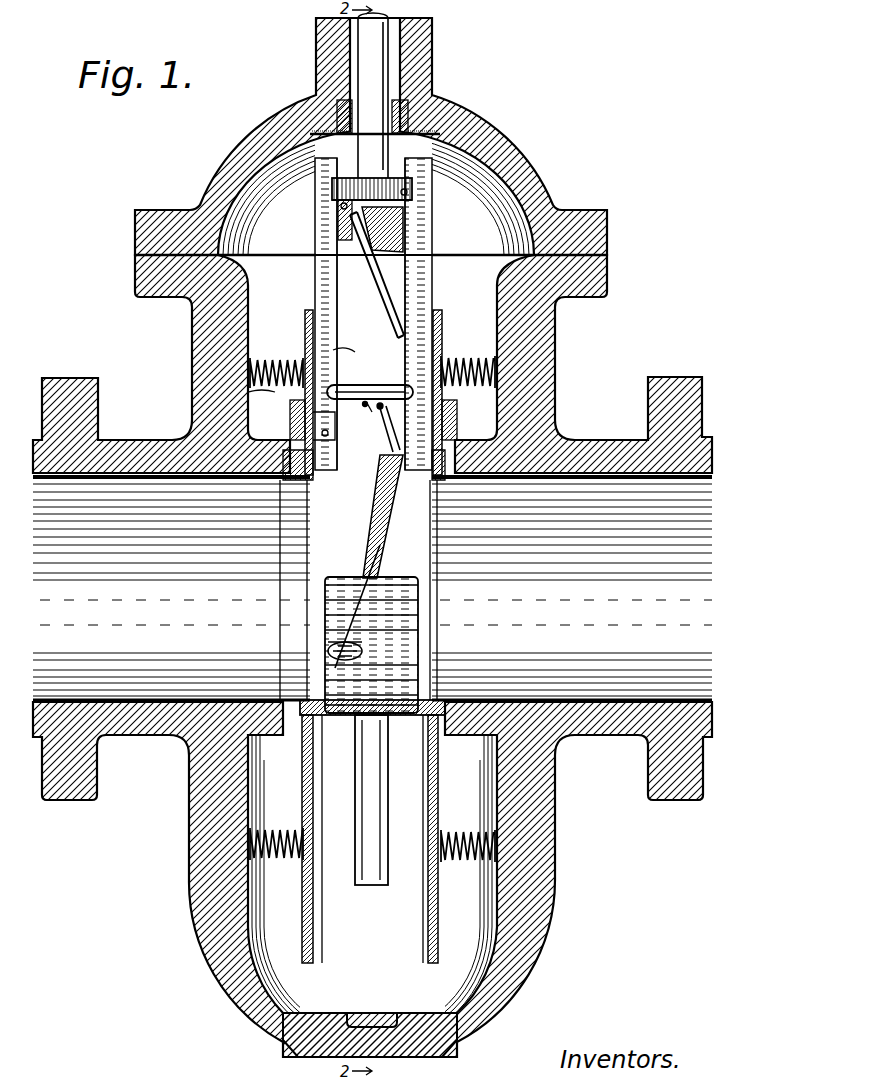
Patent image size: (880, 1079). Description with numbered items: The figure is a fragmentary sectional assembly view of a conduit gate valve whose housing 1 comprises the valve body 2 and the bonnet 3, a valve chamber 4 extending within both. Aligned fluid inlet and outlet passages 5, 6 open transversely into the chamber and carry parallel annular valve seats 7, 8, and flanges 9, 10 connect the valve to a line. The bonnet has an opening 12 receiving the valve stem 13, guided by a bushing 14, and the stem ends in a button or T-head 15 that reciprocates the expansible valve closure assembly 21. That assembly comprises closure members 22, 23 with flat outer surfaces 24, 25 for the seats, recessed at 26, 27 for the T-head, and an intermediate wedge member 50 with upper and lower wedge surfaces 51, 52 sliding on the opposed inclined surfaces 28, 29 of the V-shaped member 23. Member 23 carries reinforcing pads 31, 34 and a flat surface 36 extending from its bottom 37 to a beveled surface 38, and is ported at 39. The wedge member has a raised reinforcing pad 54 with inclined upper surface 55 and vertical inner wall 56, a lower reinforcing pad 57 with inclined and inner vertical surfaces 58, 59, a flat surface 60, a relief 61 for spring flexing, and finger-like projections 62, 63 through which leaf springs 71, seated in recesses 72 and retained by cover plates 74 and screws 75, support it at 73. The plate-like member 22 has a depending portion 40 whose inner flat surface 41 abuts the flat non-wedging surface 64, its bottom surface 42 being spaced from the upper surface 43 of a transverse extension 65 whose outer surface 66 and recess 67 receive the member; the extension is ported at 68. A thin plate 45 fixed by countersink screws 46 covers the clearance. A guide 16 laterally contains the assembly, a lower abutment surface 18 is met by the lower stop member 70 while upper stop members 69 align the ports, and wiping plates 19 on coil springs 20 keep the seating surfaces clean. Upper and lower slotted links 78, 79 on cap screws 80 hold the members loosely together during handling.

The housing 1 is at (616, 278).
The valve body 2 is at (512, 990).
The bonnet 3 is at (518, 163).
The valve chamber 4 is at (490, 400).
The fluid inlet passage 5 is at (128, 462).
The fluid outlet passage 6 is at (605, 472).
The valve seat 7 is at (285, 512).
The valve seat 8 is at (452, 484).
The flange 9 is at (97, 773).
The flange 10 is at (648, 775).
The opening 12 is at (398, 50).
The valve stem 13 is at (356, 43).
The bushing 14 is at (470, 88).
The button or T-head 15 is at (455, 110).
The guide 16 is at (385, 832).
The lower abutment surface 18 is at (332, 1013).
The wiping plate 19 is at (307, 336).
The coil spring 20 is at (250, 366).
The valve closure assembly 21 is at (439, 206).
The closure member 22 is at (306, 233).
The closure member 23 is at (445, 223).
The outer surface 24 is at (360, 276).
The outer surface 25 is at (450, 507).
The recess 26 is at (318, 167).
The recess 27 is at (412, 183).
The upper wedge surface 28 is at (392, 262).
The lower wedge surface 29 is at (358, 602).
The upper reinforcing pad 31 is at (398, 282).
The lower reinforcing pad 34 is at (405, 575).
The flat surface 36 is at (428, 303).
The bottom of flat surface 37 is at (445, 528).
The inwardly beveled surface 38 is at (403, 237).
The port 39 is at (445, 690).
The depending portion 40 is at (345, 311).
The inner flat surface 41 is at (340, 256).
The bottom surface 42 is at (290, 480).
The upper surface 43 is at (302, 490).
The thin plate 45 is at (313, 421).
The countersink screw 46 is at (320, 434).
The wedge member 50 is at (334, 297).
The upper wedge surface 51 is at (408, 300).
The lower wedge surface 52 is at (373, 551).
The raised reinforcing pad 54 is at (443, 302).
The inclined upper surface 55 is at (350, 286).
The vertical inner wall 56 is at (318, 349).
The lower reinforcing pad 57 is at (385, 500).
The inclined surface 58 is at (385, 510).
The inner vertical surface 59 is at (400, 526).
The flat surface 60 is at (300, 395).
The relief 61 is at (366, 406).
The upper finger-like projection 62 is at (378, 386).
The lower finger-like projection 63 is at (383, 410).
The flat non-wedging surface 64 is at (334, 356).
The transverse extension 65 is at (312, 540).
The outer surface 66 is at (302, 571).
The recess 67 is at (330, 326).
The port 68 is at (292, 690).
The upper stop member 69 is at (334, 191).
The lower stop member 70 is at (320, 735).
The leaf spring 71 is at (440, 410).
The recess 72 is at (308, 406).
The spring support point 73 is at (440, 426).
The cover plate 74 is at (440, 438).
The screw 75 is at (442, 346).
The upper slotted link 78 is at (338, 213).
The lower slotted link 79 is at (328, 644).
The cap screw 80 is at (407, 190).